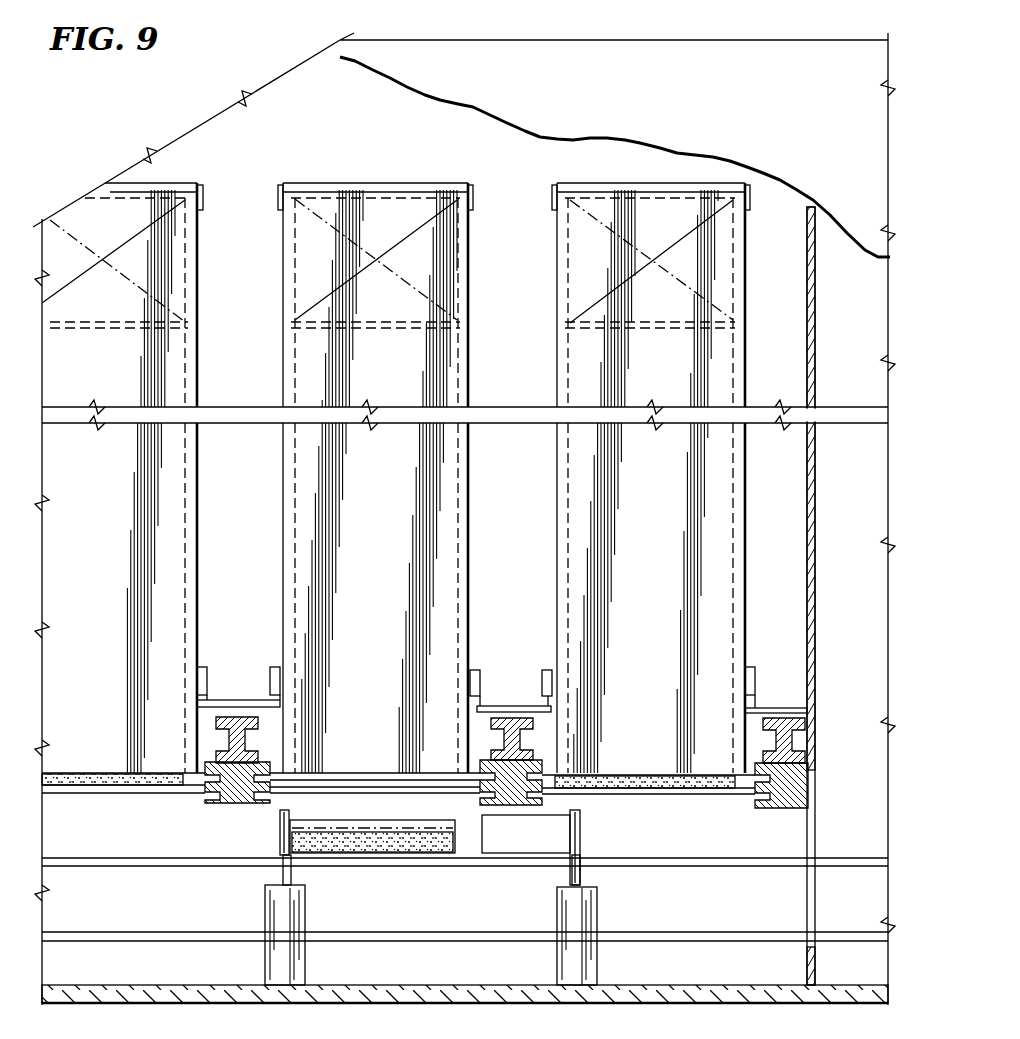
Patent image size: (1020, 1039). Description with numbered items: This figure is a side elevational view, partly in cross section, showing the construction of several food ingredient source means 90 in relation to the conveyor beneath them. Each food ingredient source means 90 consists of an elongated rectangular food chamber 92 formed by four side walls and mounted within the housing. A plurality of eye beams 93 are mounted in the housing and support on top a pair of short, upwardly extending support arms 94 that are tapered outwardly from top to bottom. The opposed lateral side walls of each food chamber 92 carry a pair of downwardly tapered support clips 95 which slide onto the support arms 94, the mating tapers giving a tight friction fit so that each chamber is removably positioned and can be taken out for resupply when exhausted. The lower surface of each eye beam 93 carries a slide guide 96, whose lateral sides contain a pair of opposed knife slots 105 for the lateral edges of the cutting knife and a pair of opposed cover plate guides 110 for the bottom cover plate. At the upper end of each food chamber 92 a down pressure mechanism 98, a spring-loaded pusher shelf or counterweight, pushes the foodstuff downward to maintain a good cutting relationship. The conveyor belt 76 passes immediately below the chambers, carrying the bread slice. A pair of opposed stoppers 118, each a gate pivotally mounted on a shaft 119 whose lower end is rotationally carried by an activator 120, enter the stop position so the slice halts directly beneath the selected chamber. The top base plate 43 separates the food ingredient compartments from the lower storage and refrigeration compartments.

The food ingredient source means 90 is at (745, 273).
The food chamber 92 is at (199, 471).
The eye beam 93 is at (235, 739).
The support arm 94 is at (262, 699).
The support clip 95 is at (271, 667).
The slide guide 96 is at (545, 803).
The down pressure mechanism 98 is at (671, 293).
The knife slot 105 is at (770, 808).
The cover plate guide 110 is at (271, 765).
The stopper 118 is at (281, 830).
The shaft 119 is at (292, 875).
The activator 120 is at (272, 950).
The conveyor belt 76 is at (108, 859).
The top base plate 43 is at (503, 984).